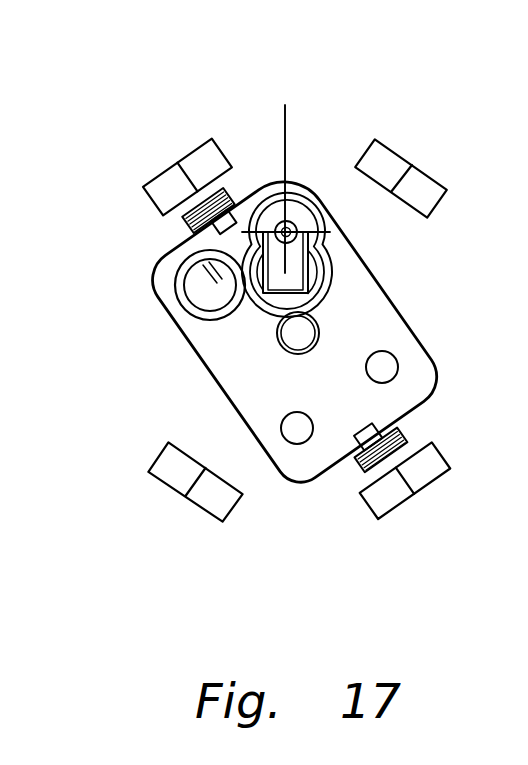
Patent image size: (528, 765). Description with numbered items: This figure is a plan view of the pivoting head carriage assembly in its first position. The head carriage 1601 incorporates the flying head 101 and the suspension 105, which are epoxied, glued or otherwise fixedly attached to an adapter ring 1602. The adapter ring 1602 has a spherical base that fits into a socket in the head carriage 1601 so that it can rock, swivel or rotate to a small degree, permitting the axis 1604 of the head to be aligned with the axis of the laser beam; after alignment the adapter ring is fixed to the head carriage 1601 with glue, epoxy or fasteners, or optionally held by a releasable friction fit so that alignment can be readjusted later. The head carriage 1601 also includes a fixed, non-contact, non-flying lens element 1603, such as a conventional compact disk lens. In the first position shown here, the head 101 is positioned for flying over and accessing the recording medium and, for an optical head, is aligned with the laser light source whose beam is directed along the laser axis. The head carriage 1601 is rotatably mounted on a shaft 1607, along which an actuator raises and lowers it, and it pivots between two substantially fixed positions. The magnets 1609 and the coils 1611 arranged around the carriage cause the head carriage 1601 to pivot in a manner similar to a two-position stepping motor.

The head carriage 1601 is at (168, 427).
The adapter ring 1602 is at (292, 192).
The lens element 1603 is at (200, 304).
The axis of the head 1604 is at (285, 106).
The shaft 1607 is at (302, 334).
The magnets 1609 is at (200, 142).
The coils 1611 is at (187, 226).
The flying head 101 is at (300, 262).
The suspension 105 is at (268, 305).